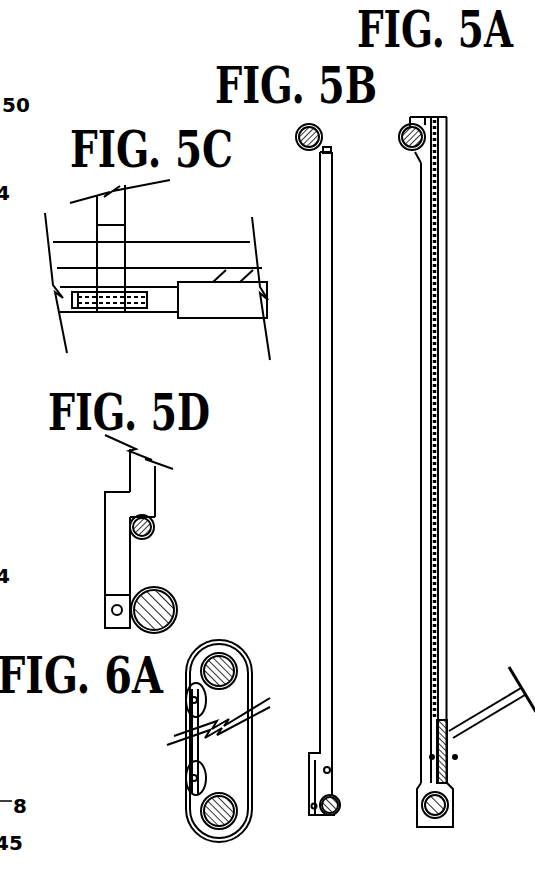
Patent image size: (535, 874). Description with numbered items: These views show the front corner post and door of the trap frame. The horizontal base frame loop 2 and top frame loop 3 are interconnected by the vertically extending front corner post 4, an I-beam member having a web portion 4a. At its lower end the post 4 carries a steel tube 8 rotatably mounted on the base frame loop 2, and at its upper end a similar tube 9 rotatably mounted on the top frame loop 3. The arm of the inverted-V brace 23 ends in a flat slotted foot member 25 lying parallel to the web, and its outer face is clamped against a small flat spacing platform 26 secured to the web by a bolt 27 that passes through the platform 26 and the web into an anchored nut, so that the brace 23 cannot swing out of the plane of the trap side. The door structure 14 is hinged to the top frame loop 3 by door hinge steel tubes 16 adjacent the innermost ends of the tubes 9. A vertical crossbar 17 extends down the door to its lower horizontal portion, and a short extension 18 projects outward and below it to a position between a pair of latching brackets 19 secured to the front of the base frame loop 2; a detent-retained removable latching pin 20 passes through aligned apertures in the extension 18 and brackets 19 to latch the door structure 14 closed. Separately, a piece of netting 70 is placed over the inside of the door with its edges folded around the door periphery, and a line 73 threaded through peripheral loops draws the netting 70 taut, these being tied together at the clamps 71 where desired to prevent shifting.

In FIG. 5A, the base frame loop 2 is at (417, 801).
In FIG. 5B, the base frame loop 2 is at (323, 790).
In FIG. 5C, the base frame loop 2 is at (155, 318).
In FIG. 5D, the base frame loop 2 is at (177, 618).
In FIG. 5A, the top frame loop 3 is at (420, 117).
In FIG. 5B, the top frame loop 3 is at (296, 141).
In FIG. 5A, the front corner post 4 is at (447, 348).
In FIG. 5A, the web portion 4a is at (438, 406).
In FIG. 5A, the steel tube 8 is at (417, 815).
In FIG. 5C, the steel tube 8 is at (215, 320).
In FIG. 5A, the tube 9 is at (428, 161).
In FIG. 5B, the door structure 14 is at (332, 268).
In FIG. 5C, the door structure 14 is at (248, 252).
In FIG. 5D, the door structure 14 is at (155, 527).
In FIG. 6A, the door structure 14 is at (212, 646).
In FIG. 5B, the door hinge steel tube 16 is at (350, 131).
In FIG. 5C, the vertical crossbar 17 is at (117, 213).
In FIG. 5D, the vertical crossbar 17 is at (147, 482).
In FIG. 5B, the extension 18 is at (331, 768).
In FIG. 5C, the extension 18 is at (115, 252).
In FIG. 5D, the extension 18 is at (113, 517).
In FIG. 5B, the latching bracket 19 is at (313, 806).
In FIG. 5C, the latching bracket 19 is at (92, 313).
In FIG. 5D, the latching bracket 19 is at (107, 626).
In FIG. 5C, the latching pin 20 is at (147, 297).
In FIG. 5D, the latching pin 20 is at (105, 610).
In FIG. 5A, the brace 23 is at (508, 687).
In FIG. 5A, the foot member 25 is at (447, 773).
In FIG. 5A, the spacing platform 26 is at (447, 777).
In FIG. 5A, the bolt 27 is at (455, 757).
In FIG. 6A, the netting 70 is at (253, 695).
In FIG. 6A, the clamp 71 is at (193, 692).
In FIG. 6A, the line 73 is at (195, 727).